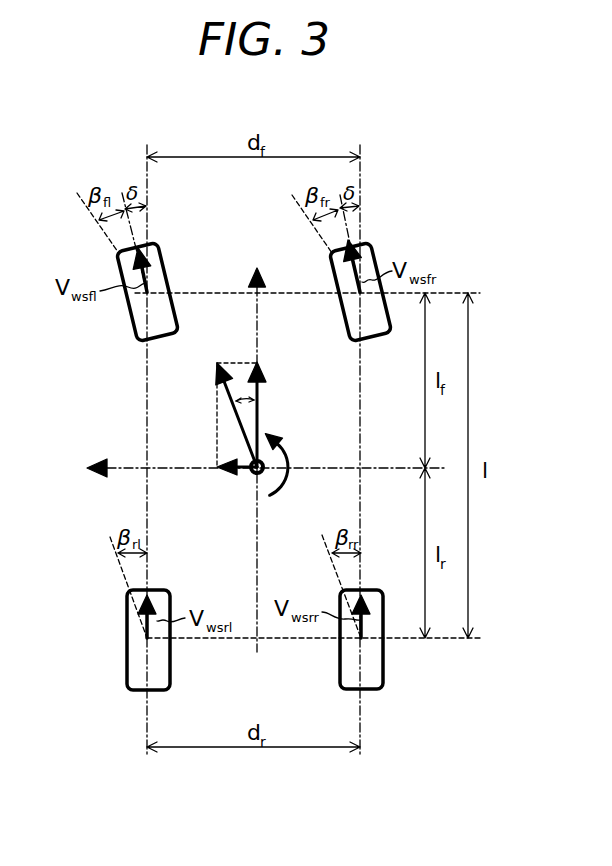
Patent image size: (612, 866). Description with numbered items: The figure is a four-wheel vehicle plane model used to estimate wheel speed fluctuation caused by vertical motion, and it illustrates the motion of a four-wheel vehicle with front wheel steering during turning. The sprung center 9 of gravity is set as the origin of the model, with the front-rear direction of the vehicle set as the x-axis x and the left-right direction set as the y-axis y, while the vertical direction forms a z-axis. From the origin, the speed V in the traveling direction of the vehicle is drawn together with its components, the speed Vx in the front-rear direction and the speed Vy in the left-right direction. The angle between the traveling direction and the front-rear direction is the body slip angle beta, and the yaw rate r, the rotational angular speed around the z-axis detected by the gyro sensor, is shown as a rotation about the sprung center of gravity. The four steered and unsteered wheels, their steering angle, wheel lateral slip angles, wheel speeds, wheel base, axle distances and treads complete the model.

The sprung center of gravity 9 is at (255, 474).
The speed in the traveling direction of the vehicle V is at (227, 407).
The speed in the front-rear direction of the vehicle Vx is at (270, 414).
The speed in the left-right direction of the vehicle Vy is at (231, 483).
The yaw rate r is at (280, 473).
The body slip angle beta is at (242, 386).
The x-axis x is at (257, 265).
The y-axis y is at (86, 469).